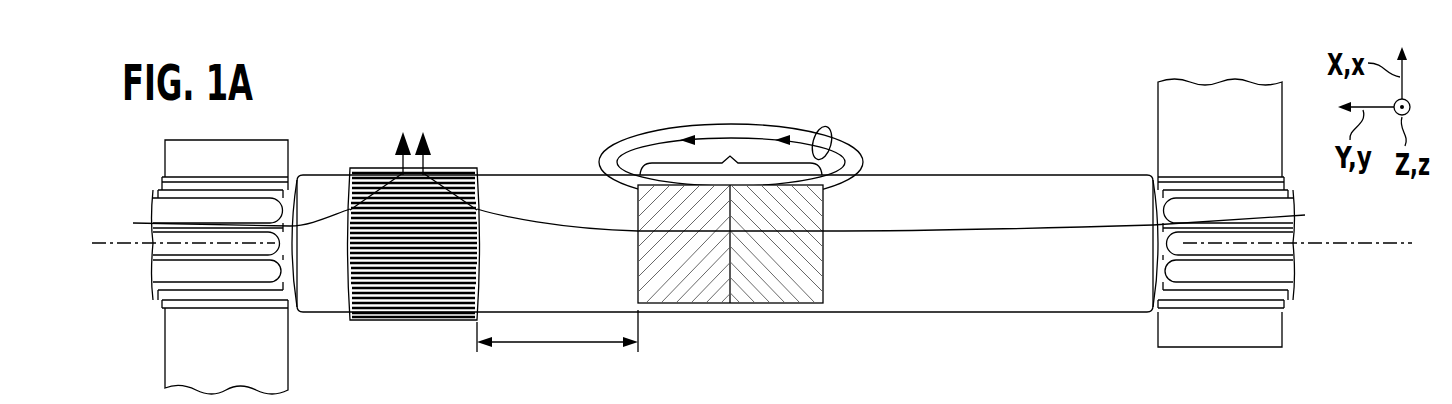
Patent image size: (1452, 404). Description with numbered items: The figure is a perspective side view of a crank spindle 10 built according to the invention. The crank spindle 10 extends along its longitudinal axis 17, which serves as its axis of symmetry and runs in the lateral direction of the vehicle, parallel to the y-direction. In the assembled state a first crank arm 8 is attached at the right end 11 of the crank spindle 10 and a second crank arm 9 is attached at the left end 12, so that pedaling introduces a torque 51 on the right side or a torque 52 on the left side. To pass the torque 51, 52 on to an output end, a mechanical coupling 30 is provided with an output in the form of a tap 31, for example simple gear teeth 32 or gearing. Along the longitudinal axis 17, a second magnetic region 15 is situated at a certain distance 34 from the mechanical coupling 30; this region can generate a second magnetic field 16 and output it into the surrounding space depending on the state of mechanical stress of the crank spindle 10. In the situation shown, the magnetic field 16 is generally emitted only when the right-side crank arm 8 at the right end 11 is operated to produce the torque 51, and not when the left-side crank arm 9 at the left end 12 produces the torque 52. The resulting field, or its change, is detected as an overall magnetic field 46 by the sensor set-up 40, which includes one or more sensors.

The first crank arm 8 is at (1270, 331).
The second crank arm 9 is at (180, 351).
The crank spindle 10 is at (790, 106).
The right end 11 is at (1326, 218).
The left end 12 is at (134, 206).
The second magnetic region 15 is at (732, 156).
The second magnetic field 16 is at (868, 126).
The overall magnetic field 46 is at (828, 127).
The longitudinal axis 17 is at (100, 246).
The mechanical coupling 30 is at (480, 208).
The tap 31 is at (480, 208).
The gear teeth 32 is at (462, 153).
The distance 34 is at (543, 346).
The sensor set-up 40 is at (856, 398).
The torque on the right side 51 is at (527, 229).
The torque on the left side 52 is at (313, 228).